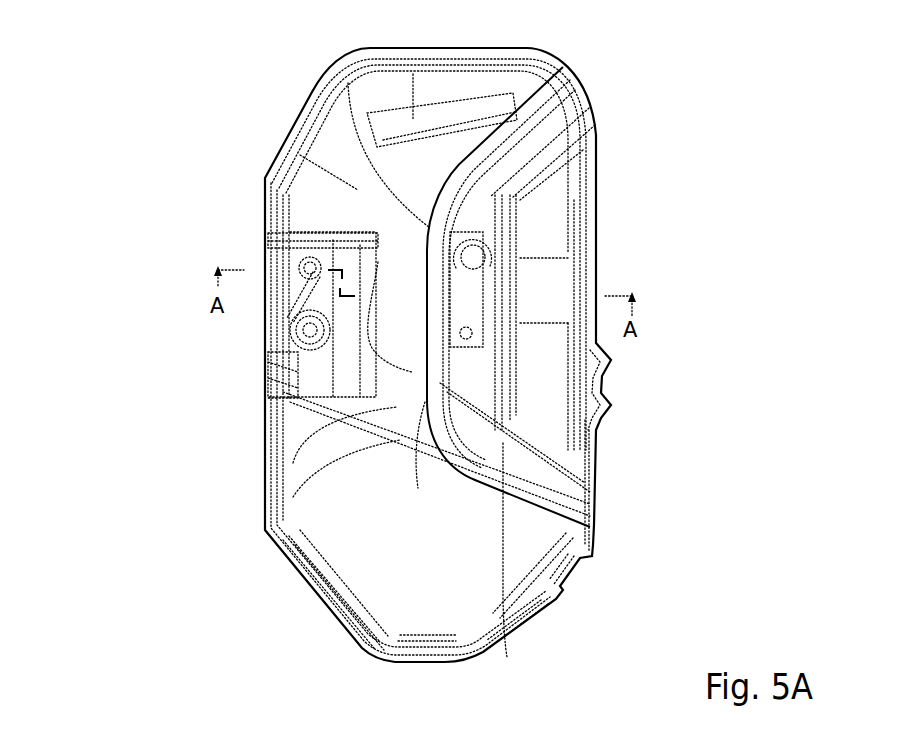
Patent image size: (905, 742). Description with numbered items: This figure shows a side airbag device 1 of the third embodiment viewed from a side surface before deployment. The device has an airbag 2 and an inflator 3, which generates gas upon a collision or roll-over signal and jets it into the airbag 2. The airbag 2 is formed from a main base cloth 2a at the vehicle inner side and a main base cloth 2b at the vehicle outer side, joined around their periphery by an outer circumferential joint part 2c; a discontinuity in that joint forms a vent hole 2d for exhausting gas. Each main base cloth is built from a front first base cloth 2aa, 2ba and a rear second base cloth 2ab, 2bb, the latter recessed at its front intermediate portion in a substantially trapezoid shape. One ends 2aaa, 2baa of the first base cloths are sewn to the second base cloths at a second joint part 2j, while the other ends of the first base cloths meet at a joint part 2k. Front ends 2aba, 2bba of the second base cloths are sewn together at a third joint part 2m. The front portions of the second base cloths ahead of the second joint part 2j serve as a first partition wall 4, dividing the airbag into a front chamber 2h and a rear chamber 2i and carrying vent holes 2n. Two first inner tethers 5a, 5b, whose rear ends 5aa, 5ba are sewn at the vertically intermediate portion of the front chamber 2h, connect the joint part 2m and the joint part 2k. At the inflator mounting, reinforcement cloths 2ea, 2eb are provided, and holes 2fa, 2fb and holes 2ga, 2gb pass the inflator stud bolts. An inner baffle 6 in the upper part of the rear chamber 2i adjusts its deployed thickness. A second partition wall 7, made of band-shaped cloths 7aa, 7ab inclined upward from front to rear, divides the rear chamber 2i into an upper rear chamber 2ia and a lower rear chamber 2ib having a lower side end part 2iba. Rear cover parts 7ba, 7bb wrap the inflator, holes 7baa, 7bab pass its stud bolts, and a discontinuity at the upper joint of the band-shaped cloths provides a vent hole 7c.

The side airbag device 1 is at (600, 70).
The airbag 2 is at (606, 120).
The main base cloth 2a is at (275, 560).
The main base cloth 2b is at (271, 592).
The first base cloth 2aa is at (603, 492).
The first base cloth 2ba is at (656, 491).
The one end of first base cloth 2aaa is at (335, 60).
The one end of first base cloth 2baa is at (365, 338).
The front end of second base cloth 2aba is at (603, 425).
The front end of second base cloth 2bba is at (668, 482).
The second base cloth 2ab is at (495, 660).
The second base cloth 2bb is at (554, 648).
The outer circumferential joint part 2c is at (500, 60).
The vent hole 2d is at (612, 382).
The reinforcement cloth 2ea is at (335, 457).
The reinforcement cloth 2eb is at (268, 452).
The hole 2fa is at (223, 245).
The hole 2fb is at (180, 372).
The hole 2ga is at (223, 245).
The hole 2gb is at (180, 372).
The front chamber 2h is at (605, 205).
The rear chamber 2i is at (310, 594).
The upper rear chamber 2ia is at (290, 120).
The lower rear chamber 2ib is at (350, 645).
The lower side end part of lower rear chamber 2iba is at (430, 668).
The second joint part 2j is at (428, 462).
The joint part 2k is at (602, 240).
The third joint part 2m is at (522, 355).
The vent hole 2n is at (471, 289).
The inflator 3 is at (270, 412).
The first partition wall 4 is at (600, 528).
The first inner tether 5a is at (602, 278).
The first inner tether 5b is at (644, 325).
The one end of first inner tether 5aa is at (275, 158).
The one end of first inner tether 5ba is at (340, 392).
The inner baffle 6 is at (407, 48).
The second partition wall 7 is at (290, 493).
The band-shaped cloth 7aa is at (480, 594).
The band-shaped cloth 7ab is at (555, 598).
The cover part 7ba is at (288, 210).
The cover part 7bb is at (213, 355).
The hole 7baa is at (270, 253).
The hole 7bab is at (268, 353).
The vent hole 7c is at (403, 360).